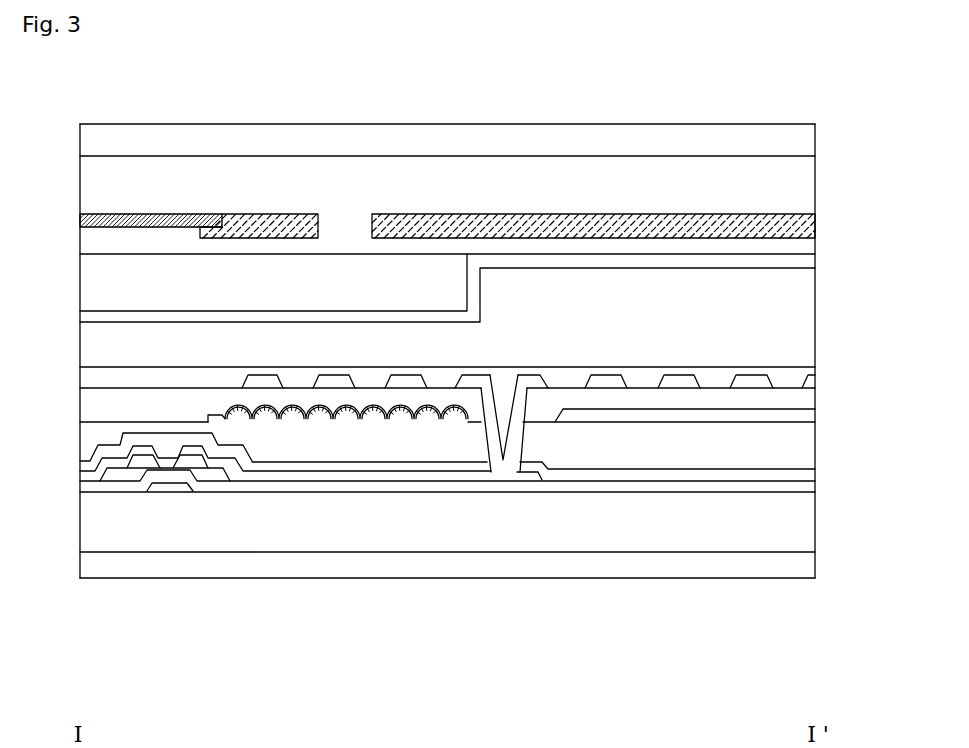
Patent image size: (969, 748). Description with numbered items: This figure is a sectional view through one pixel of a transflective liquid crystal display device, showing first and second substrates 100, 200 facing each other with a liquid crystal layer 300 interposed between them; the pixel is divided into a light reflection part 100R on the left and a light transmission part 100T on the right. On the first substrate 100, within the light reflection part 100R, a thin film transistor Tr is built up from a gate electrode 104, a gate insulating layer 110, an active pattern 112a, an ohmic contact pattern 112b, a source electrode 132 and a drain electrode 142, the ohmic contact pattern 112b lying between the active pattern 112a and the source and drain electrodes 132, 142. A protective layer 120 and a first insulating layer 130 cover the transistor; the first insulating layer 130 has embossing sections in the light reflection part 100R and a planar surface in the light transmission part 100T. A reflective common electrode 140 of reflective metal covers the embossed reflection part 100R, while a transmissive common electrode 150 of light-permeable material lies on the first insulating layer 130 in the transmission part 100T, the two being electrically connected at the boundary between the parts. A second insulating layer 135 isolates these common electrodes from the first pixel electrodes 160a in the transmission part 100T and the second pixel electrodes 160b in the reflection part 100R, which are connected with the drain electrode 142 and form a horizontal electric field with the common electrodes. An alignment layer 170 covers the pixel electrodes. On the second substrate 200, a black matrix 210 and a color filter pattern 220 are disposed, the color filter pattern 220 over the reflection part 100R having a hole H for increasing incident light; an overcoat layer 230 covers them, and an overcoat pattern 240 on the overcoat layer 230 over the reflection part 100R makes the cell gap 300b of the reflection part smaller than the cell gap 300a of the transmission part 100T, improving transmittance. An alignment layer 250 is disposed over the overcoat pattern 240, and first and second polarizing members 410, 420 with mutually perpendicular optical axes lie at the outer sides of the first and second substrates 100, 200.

The first substrate 100 is at (795, 520).
The light reflection part 100R is at (467, 690).
The light transmission part 100T is at (815, 672).
The gate electrode 104 is at (158, 488).
The gate insulating layer 110 is at (795, 485).
The active pattern 112a is at (113, 477).
The ohmic contact pattern 112b is at (210, 470).
The protective layer 120 is at (800, 465).
The first insulating layer 130 is at (795, 435).
The source electrode 132 is at (97, 470).
The second insulating layer 135 is at (800, 400).
The reflective common electrode 140 is at (437, 404).
The drain electrode 142 is at (280, 478).
The transmissive common electrode 150 is at (563, 415).
The first pixel electrodes 160a is at (673, 378).
The second pixel electrodes 160b is at (253, 378).
The alignment layer 170 is at (795, 372).
The second substrate 200 is at (793, 188).
The black matrix 210 is at (137, 213).
The color filter pattern 220 is at (800, 232).
The overcoat layer 230 is at (593, 247).
The overcoat pattern 240 is at (443, 277).
The alignment layer 250 is at (795, 265).
The liquid crystal layer 300 is at (800, 320).
The cell gap of the light transmission part 300a is at (730, 367).
The cell gap of the light reflection part 300b is at (160, 367).
The first polarizing member 410 is at (800, 568).
The second polarizing member 420 is at (795, 141).
The hole H is at (351, 214).
The thin film transistor Tr is at (45, 635).